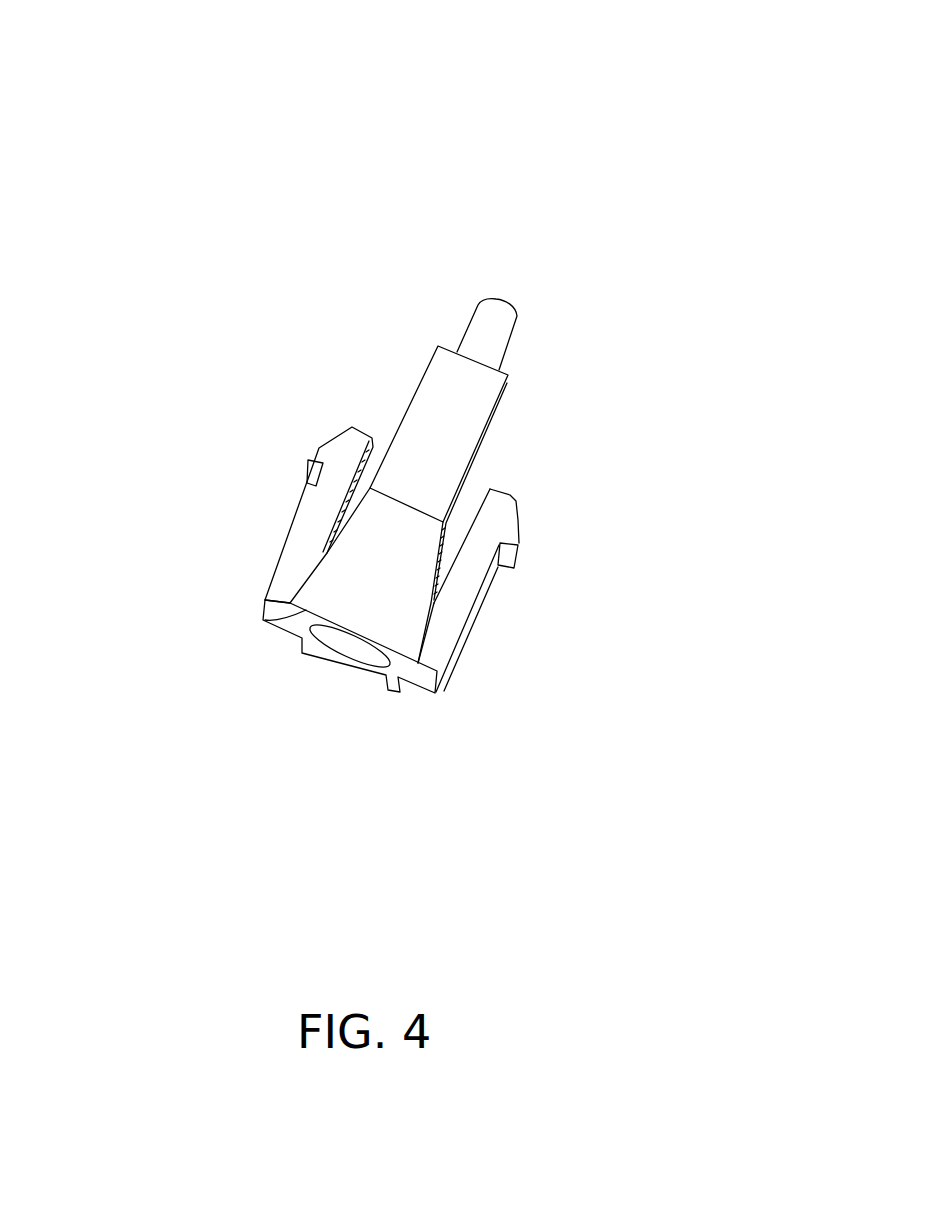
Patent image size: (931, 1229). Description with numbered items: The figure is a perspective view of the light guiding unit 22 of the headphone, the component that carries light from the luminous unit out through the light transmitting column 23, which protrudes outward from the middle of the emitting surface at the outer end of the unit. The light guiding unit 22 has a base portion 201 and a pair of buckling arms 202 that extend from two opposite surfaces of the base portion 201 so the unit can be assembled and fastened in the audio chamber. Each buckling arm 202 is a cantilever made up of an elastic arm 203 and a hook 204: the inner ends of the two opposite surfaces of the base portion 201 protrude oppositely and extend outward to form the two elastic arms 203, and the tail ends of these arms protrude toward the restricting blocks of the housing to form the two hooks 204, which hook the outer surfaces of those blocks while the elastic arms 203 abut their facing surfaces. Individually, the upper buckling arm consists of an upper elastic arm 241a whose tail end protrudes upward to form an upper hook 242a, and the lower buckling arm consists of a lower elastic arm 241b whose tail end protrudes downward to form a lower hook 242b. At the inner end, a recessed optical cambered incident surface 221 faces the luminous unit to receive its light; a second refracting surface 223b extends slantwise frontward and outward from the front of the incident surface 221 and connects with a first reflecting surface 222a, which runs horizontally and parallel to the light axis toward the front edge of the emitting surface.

The light guiding unit 22 is at (98, 39).
The light transmitting column 23 is at (498, 314).
The base portion 201 is at (485, 415).
The buckling arms 202 is at (272, 565).
The elastic arms 203 is at (282, 540).
The hooks 204 is at (326, 431).
The incident surface 221 is at (353, 647).
The first reflecting surface 222a is at (440, 365).
The second refracting surface 223b is at (265, 620).
The upper elastic arm 241a is at (315, 521).
The lower elastic arm 241b is at (463, 572).
The upper hook 242a is at (323, 453).
The lower hook 242b is at (512, 532).